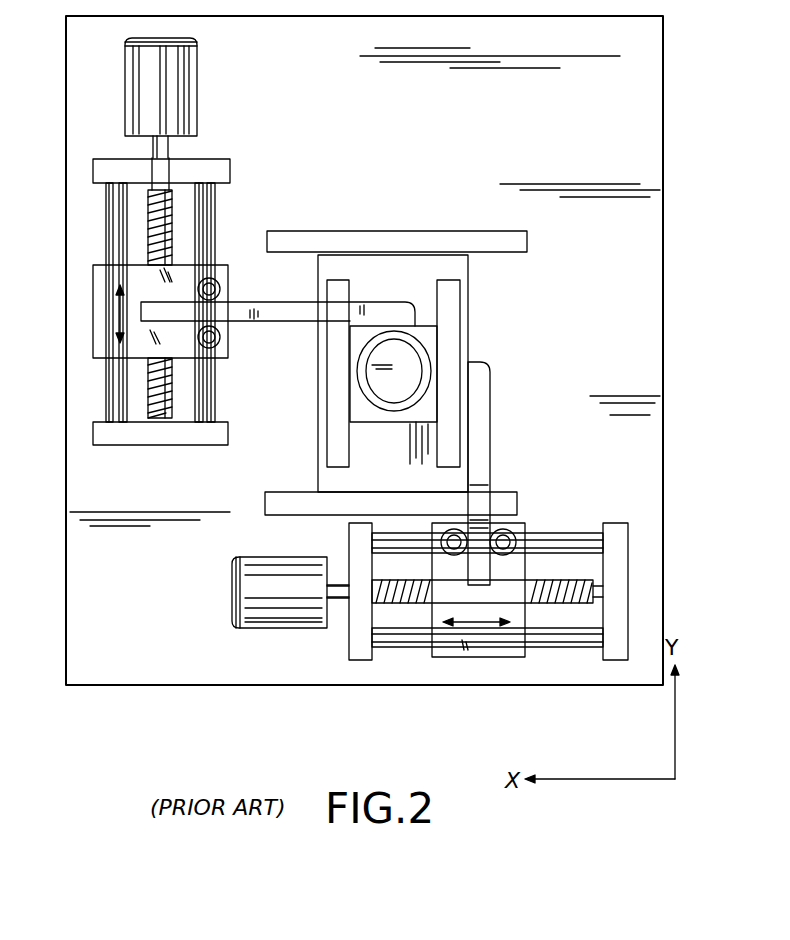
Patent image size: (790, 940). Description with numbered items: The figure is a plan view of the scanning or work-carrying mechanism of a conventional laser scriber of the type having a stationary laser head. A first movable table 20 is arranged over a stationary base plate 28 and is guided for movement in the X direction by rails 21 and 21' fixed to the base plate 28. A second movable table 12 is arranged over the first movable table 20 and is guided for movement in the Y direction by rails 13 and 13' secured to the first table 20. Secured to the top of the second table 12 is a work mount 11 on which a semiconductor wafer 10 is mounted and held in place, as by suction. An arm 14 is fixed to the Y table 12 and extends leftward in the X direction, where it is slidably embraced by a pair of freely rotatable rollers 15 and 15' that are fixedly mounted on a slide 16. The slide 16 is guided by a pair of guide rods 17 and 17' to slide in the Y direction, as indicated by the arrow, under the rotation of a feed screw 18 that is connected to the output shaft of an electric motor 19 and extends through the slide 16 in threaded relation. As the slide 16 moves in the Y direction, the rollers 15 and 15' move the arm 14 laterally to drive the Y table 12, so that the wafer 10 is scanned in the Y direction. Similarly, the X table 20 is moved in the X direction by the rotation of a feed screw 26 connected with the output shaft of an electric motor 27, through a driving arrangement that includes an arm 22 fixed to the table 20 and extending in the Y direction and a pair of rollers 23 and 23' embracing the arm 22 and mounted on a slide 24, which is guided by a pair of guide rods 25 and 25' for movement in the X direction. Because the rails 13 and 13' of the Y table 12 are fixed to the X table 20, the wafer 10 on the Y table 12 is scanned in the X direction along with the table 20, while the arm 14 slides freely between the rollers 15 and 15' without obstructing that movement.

The semiconductor wafer 10 is at (376, 402).
The work mount 11 is at (388, 415).
The second movable table 12 is at (407, 420).
The rail 13 is at (474, 373).
The rail 13' is at (314, 373).
The arm 14 is at (281, 305).
The roller 15 is at (234, 285).
The roller 15' is at (237, 339).
The slide 16 is at (93, 282).
The guide rod 17 is at (129, 314).
The guide rod 17' is at (232, 302).
The feed screw 18 is at (148, 210).
The electric motor 19 is at (130, 78).
The first movable table 20 is at (468, 269).
The rail 21 is at (397, 227).
The rail 21' is at (413, 492).
The arm 22 is at (492, 398).
The roller 23 is at (452, 563).
The roller 23' is at (510, 563).
The slide 24 is at (505, 658).
The guide rod 25 is at (488, 621).
The guide rod 25' is at (487, 525).
The feed screw 26 is at (408, 604).
The electric motor 27 is at (280, 628).
The stationary base plate 28 is at (193, 678).